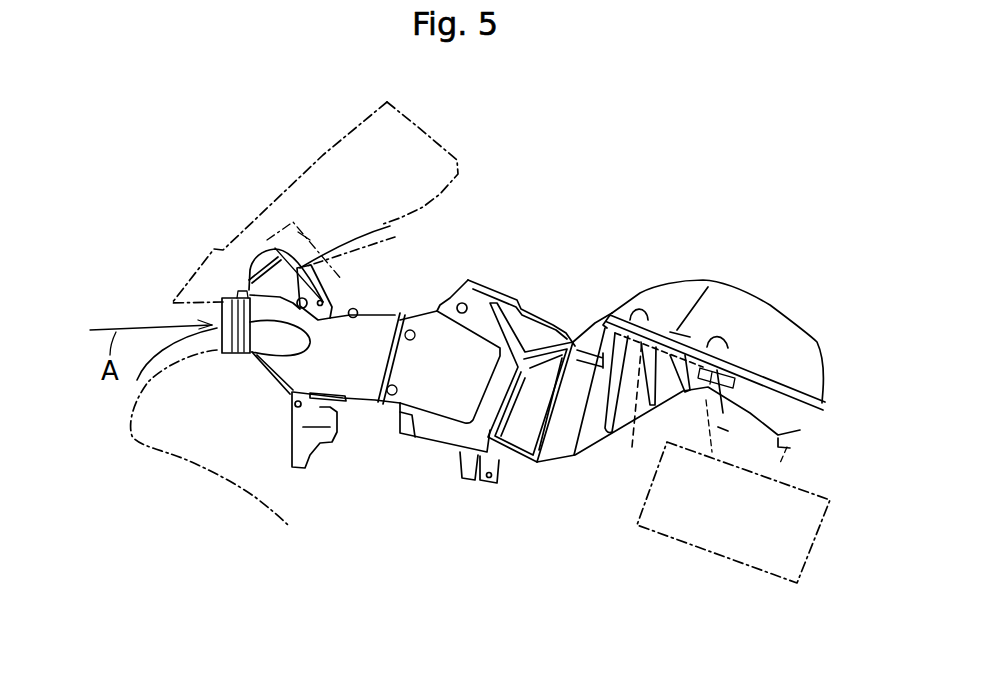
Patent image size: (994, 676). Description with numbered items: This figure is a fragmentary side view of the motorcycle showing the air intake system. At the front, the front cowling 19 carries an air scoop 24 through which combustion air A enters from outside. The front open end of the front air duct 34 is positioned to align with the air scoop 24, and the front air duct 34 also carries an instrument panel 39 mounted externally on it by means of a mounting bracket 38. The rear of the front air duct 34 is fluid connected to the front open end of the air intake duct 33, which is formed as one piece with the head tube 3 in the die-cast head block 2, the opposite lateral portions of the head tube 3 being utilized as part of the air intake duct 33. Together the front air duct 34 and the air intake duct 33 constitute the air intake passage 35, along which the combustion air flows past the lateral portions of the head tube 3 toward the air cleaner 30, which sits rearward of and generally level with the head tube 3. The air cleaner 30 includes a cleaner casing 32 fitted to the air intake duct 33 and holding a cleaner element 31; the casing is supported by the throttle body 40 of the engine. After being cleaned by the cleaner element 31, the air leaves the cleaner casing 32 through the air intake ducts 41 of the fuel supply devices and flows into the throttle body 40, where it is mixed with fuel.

The head block 2 is at (568, 204).
The head tube 3 is at (480, 297).
The front cowling 19 is at (303, 170).
The air scoop 24 is at (192, 317).
The air cleaner 30 is at (765, 290).
The cleaner element 31 is at (626, 411).
The cleaner casing 32 is at (797, 322).
The air intake duct 33 is at (527, 333).
The front air duct 34 is at (344, 312).
The air intake passage 35 is at (361, 372).
The mounting bracket 38 is at (362, 245).
The instrument panel 39 is at (304, 234).
The throttle body 40 is at (720, 560).
The air intake ducts 41 is at (782, 457).